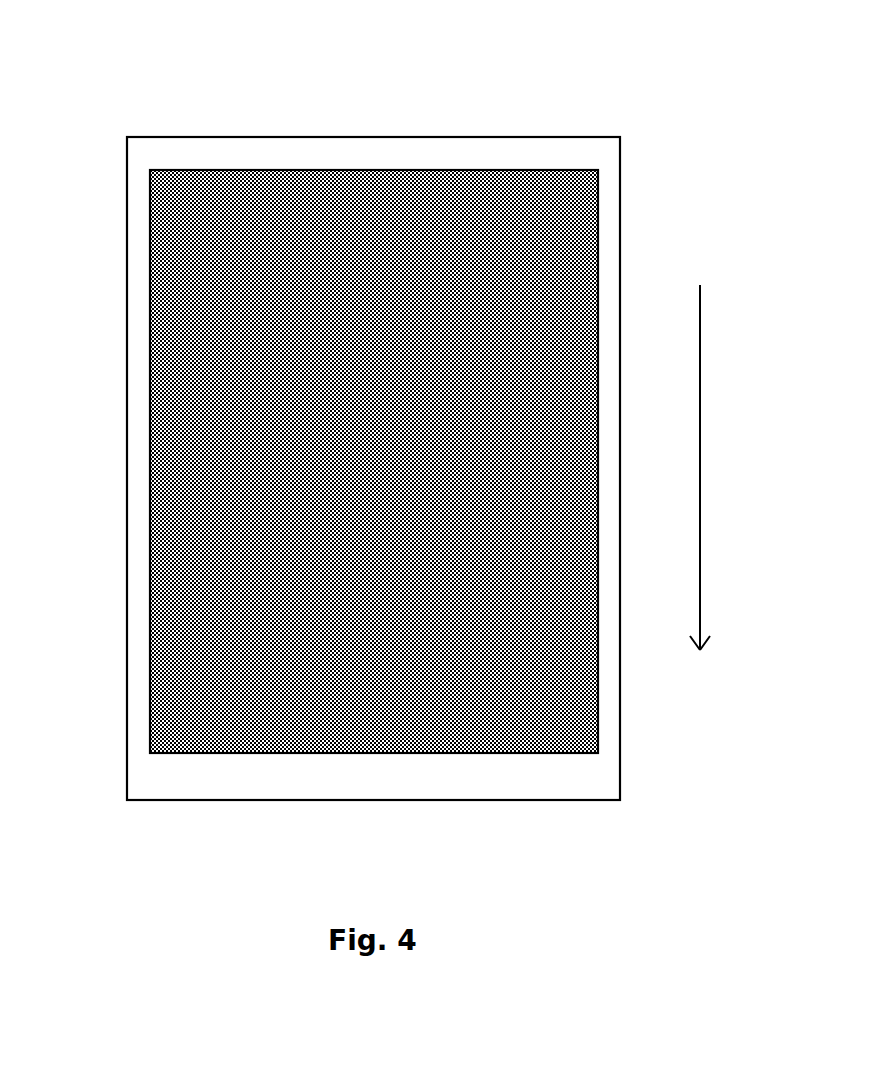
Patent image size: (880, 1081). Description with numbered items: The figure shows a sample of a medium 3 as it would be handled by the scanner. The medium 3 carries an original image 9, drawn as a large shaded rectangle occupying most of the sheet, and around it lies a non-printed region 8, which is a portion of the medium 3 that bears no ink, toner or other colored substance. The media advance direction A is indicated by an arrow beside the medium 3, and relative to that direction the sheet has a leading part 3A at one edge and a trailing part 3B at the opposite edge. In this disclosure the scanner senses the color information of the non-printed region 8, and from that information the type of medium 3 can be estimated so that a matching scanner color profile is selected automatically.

The medium 3 is at (645, 111).
The original image 9 is at (207, 467).
The trailing part 3B is at (333, 148).
The leading part 3A is at (242, 775).
The non-printed region 8 is at (505, 788).
The media advance direction A is at (700, 468).